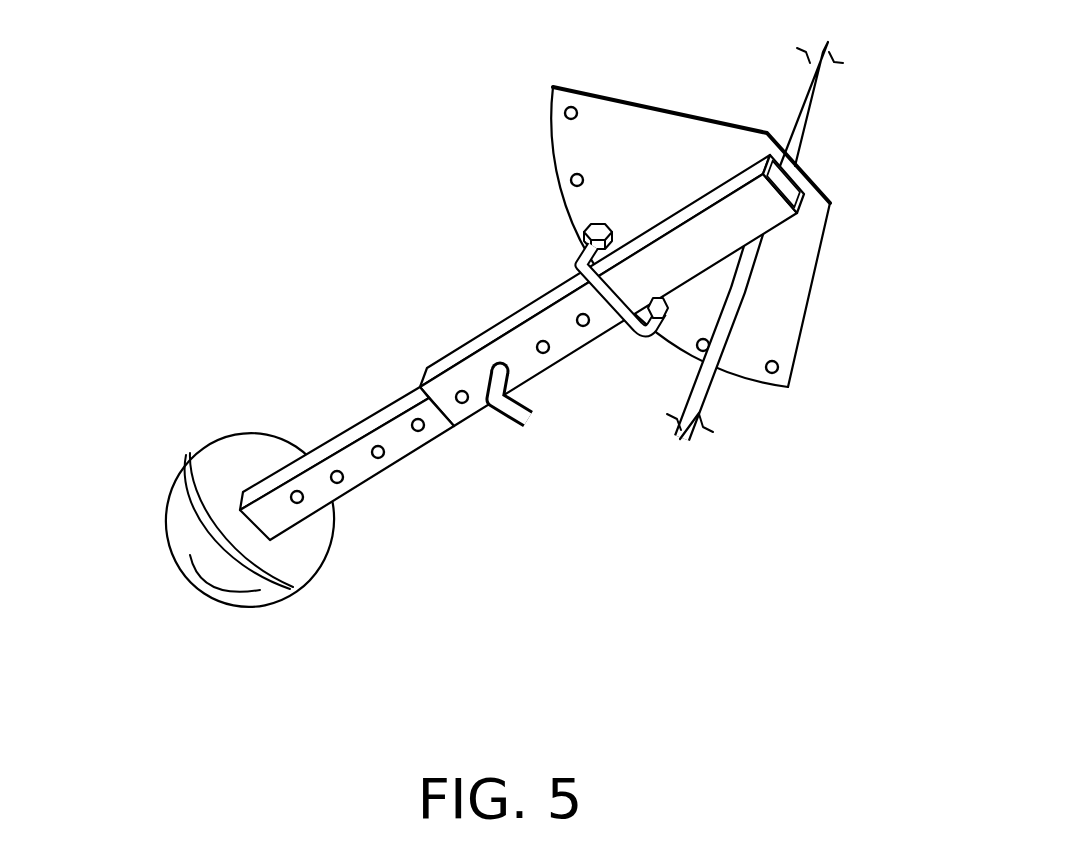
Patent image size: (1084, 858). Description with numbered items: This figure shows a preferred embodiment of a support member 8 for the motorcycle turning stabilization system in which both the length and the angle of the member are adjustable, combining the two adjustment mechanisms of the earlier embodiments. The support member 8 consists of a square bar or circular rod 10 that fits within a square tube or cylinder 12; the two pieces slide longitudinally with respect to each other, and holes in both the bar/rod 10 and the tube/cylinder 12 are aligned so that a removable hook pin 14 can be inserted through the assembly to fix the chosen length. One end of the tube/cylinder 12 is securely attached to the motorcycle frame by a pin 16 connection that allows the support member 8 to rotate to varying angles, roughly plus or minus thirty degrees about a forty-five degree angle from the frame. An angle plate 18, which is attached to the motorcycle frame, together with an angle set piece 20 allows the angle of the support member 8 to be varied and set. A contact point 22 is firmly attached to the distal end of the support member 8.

The support member 8 is at (509, 316).
The square bar or circular rod 10 is at (375, 485).
The square tube or cylinder 12 is at (566, 345).
The removable hook pin 14 is at (517, 414).
The pin 16 is at (838, 133).
The angle plate 18 is at (644, 130).
The angle set piece 20 is at (580, 263).
The contact point 22 is at (176, 557).